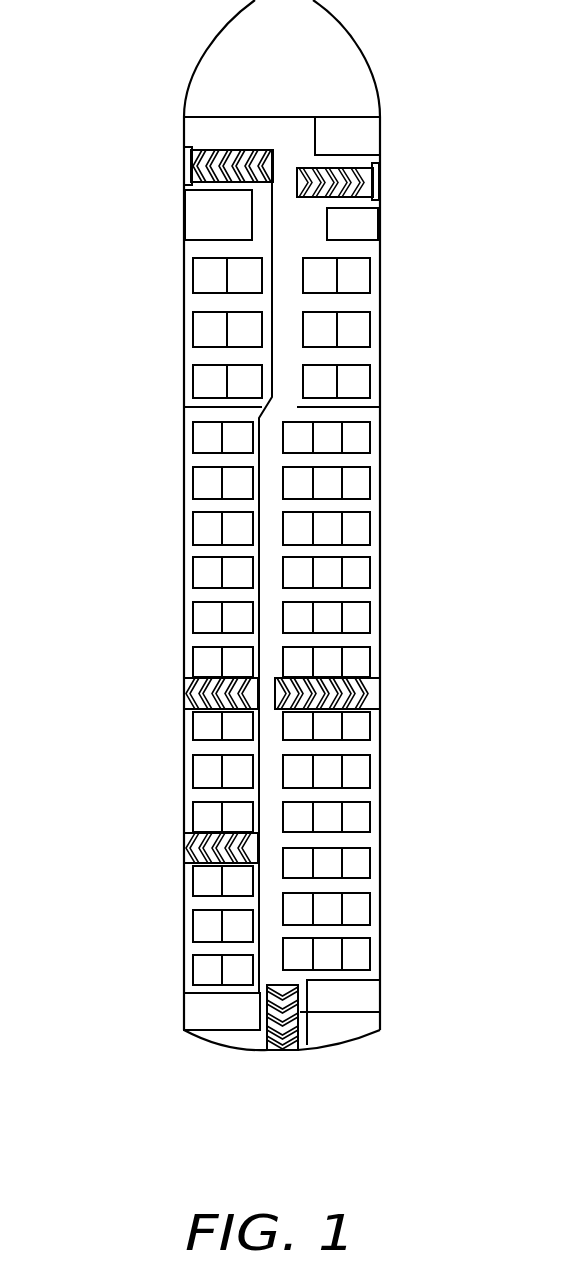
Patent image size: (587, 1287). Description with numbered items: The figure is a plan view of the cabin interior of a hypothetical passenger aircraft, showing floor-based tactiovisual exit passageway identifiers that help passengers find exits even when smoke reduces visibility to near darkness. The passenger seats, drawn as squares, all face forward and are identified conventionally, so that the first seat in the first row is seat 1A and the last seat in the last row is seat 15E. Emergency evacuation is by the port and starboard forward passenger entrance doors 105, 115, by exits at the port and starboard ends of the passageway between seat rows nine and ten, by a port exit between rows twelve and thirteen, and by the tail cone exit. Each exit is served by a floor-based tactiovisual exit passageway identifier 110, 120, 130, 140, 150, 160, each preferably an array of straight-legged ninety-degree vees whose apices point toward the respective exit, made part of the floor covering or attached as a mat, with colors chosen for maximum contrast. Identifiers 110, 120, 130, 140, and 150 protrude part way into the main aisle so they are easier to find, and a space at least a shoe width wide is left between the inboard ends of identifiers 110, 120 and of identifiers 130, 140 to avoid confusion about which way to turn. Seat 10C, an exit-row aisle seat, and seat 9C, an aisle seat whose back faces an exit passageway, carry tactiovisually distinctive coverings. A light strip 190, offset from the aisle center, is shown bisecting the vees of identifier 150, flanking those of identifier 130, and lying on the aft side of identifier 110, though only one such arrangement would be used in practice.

The floor-based tactiovisual exit passageway identifier 110 is at (207, 150).
The port forward passenger entrance door 105 is at (190, 172).
The seat 1A is at (202, 268).
The light strip 190 is at (270, 362).
The floor-based tactiovisual exit passageway identifier 120 is at (372, 164).
The starboard forward passenger entrance door 115 is at (375, 186).
The seat 9C is at (300, 659).
The floor-based tactiovisual exit passageway identifier 130 is at (190, 692).
The floor-based tactiovisual exit passageway identifier 140 is at (365, 690).
The seat 10C is at (297, 730).
The floor-based tactiovisual exit passageway identifier 150 is at (195, 838).
The seat 15E is at (358, 953).
The floor-based tactiovisual exit passageway identifier 160 is at (285, 1033).